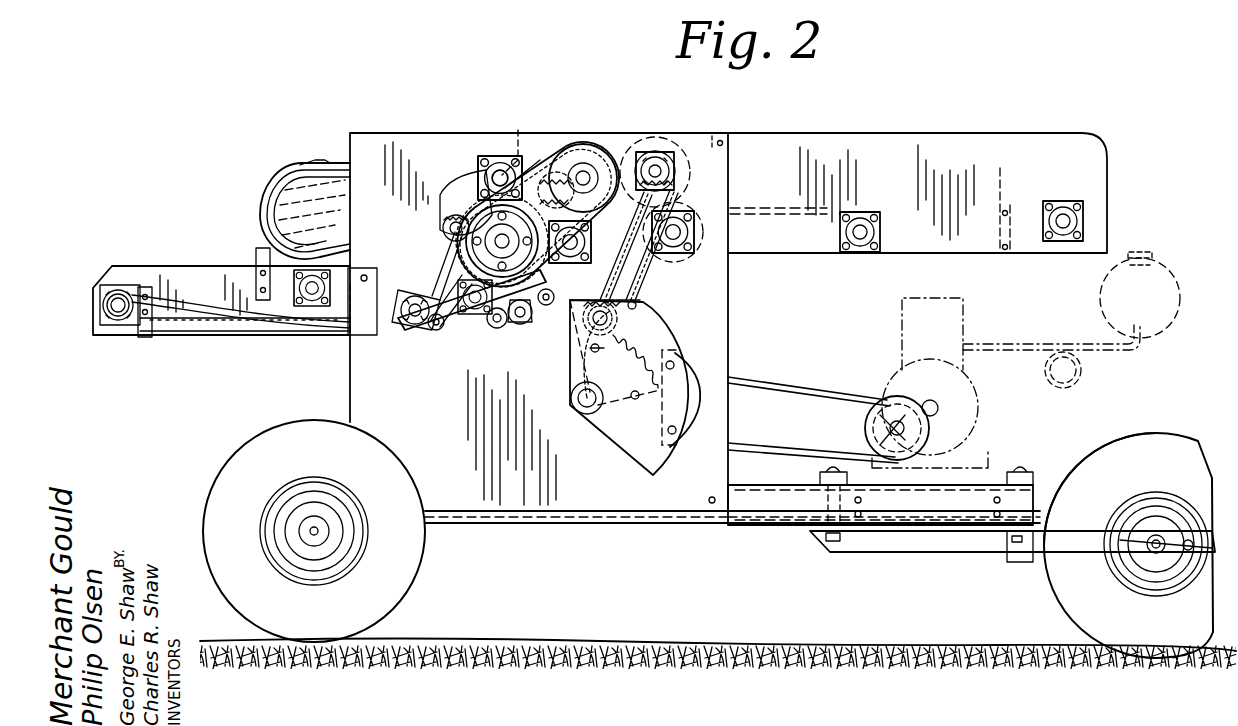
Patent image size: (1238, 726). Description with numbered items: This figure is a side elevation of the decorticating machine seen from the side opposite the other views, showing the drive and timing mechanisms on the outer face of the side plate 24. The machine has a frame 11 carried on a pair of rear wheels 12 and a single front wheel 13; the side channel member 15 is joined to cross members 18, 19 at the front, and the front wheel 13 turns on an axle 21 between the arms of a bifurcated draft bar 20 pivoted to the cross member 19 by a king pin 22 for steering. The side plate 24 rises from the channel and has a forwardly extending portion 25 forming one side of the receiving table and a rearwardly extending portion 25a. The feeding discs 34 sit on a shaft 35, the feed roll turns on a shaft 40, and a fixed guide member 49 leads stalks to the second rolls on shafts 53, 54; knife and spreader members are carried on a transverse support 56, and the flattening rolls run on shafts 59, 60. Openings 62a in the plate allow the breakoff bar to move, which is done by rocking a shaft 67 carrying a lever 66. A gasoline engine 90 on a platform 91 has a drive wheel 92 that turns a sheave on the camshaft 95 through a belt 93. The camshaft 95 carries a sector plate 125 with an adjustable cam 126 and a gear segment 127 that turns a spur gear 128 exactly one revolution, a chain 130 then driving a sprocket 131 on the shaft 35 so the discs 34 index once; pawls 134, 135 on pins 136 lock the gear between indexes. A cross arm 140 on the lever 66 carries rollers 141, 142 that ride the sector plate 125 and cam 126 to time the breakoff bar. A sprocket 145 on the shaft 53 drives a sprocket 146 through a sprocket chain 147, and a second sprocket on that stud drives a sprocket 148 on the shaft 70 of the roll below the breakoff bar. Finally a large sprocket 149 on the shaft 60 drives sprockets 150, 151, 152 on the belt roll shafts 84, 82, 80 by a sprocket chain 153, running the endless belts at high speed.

The frame 11 is at (735, 528).
The rear wheels 12 is at (258, 444).
The front wheel 13 is at (1166, 450).
The side channel member 15 is at (786, 518).
The cross member 18 is at (1035, 480).
The cross member 19 is at (818, 478).
The bifurcated draft bar 20 is at (922, 556).
The axle 21 is at (1150, 555).
The king pin 22 is at (838, 470).
The side plate 24 is at (545, 524).
The forwardly extending portion 25 is at (990, 143).
The rearwardly extending portion 25a is at (197, 262).
The feeding discs 34 is at (680, 150).
The shaft 35 is at (652, 150).
The shaft 40 is at (700, 245).
The guide member 49 is at (628, 245).
The shaft 53 is at (588, 170).
The shaft 54 is at (586, 242).
The transverse support 56 is at (554, 170).
The shaft 59 is at (500, 163).
The shaft 60 is at (490, 178).
The openings 62a is at (442, 196).
The lever 66 is at (496, 328).
The shaft 67 is at (518, 324).
The shaft 70 is at (465, 237).
The shaft 80 is at (440, 325).
The shaft 82 is at (108, 290).
The shaft 84 is at (408, 300).
The gasoline engine 90 is at (980, 404).
The platform 91 is at (1005, 480).
The drive wheel 92 is at (868, 424).
The belt 93 is at (775, 380).
The camshaft 95 is at (577, 408).
The sector plate 125 is at (632, 456).
The cam 126 is at (684, 370).
The gear segment 127 is at (652, 335).
The spur gear 128 is at (636, 302).
The chain 130 is at (672, 185).
The sprocket 131 is at (675, 172).
The pawl 134 is at (620, 312).
The pawl 135 is at (590, 298).
The pins 136 is at (592, 300).
The cross arm 140 is at (524, 325).
The roller 141 is at (547, 306).
The roller 142 is at (470, 318).
The sprocket 145 is at (583, 143).
The sprocket 146 is at (523, 141).
The sprocket chain 147 is at (540, 158).
The sprocket 148 is at (443, 224).
The sprocket 149 is at (456, 246).
The sprocket 150 is at (440, 290).
The sprocket 151 is at (118, 320).
The sprocket 152 is at (430, 330).
The sprocket chain 153 is at (290, 333).